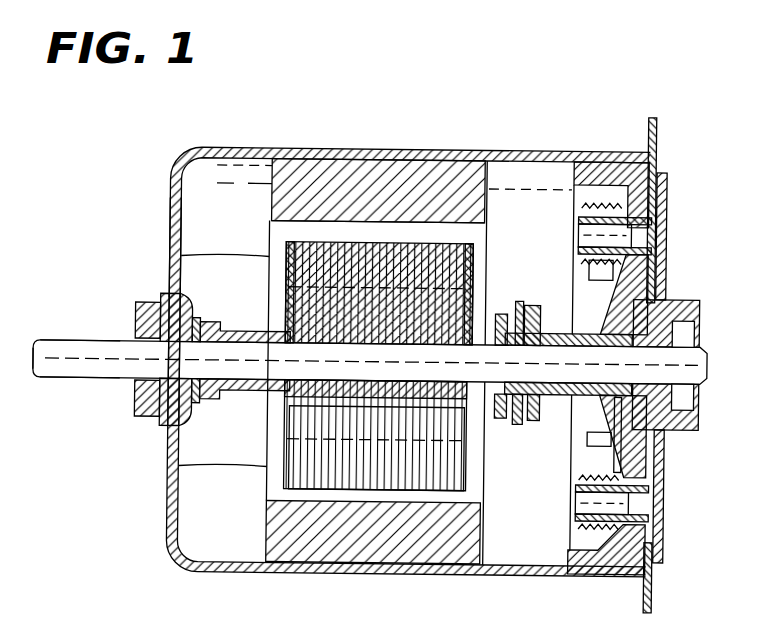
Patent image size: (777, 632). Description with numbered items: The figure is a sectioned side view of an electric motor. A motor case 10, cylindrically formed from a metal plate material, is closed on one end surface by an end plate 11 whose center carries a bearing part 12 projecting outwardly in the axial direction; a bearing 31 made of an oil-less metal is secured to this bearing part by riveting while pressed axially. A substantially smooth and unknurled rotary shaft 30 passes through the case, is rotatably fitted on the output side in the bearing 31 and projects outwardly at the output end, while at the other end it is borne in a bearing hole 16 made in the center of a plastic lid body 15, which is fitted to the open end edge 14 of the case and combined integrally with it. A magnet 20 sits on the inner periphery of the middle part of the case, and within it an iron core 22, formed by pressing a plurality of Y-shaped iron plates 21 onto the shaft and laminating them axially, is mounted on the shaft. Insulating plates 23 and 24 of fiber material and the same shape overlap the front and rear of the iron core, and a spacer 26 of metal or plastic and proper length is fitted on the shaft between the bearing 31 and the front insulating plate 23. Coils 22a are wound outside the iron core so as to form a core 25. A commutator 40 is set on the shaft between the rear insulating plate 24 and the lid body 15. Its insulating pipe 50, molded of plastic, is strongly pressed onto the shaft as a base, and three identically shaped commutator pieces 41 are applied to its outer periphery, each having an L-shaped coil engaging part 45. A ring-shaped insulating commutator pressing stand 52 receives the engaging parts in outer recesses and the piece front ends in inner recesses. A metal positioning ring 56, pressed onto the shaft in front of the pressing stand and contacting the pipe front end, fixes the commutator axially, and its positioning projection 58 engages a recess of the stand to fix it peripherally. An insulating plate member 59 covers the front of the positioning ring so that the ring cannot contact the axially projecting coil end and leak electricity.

The motor case 10 is at (455, 162).
The end plate 11 is at (172, 199).
The bearing part 12 is at (152, 308).
The open end edge 14 is at (604, 172).
The lid body 15 is at (630, 165).
The bearing hole 16 is at (710, 351).
The magnet 20 is at (357, 545).
The Y-shaped iron plates 21 is at (437, 250).
The iron core 22 is at (352, 262).
The coils 22a is at (280, 440).
The front insulating plate 23 is at (285, 310).
The rear insulating plate 24 is at (490, 238).
The core 25 is at (318, 233).
The spacer 26 is at (245, 402).
The rotary shaft 30 is at (86, 375).
The bearing 31 is at (148, 323).
The commutator 40 is at (588, 320).
The commutator pieces 41 is at (553, 403).
The coil engaging part 45 is at (523, 298).
The insulating pipe 50 is at (653, 422).
The commutator pressing stand 52 is at (516, 300).
The positioning ring 56 is at (505, 403).
The positioning projection 58 is at (518, 420).
The insulating plate member 59 is at (500, 332).